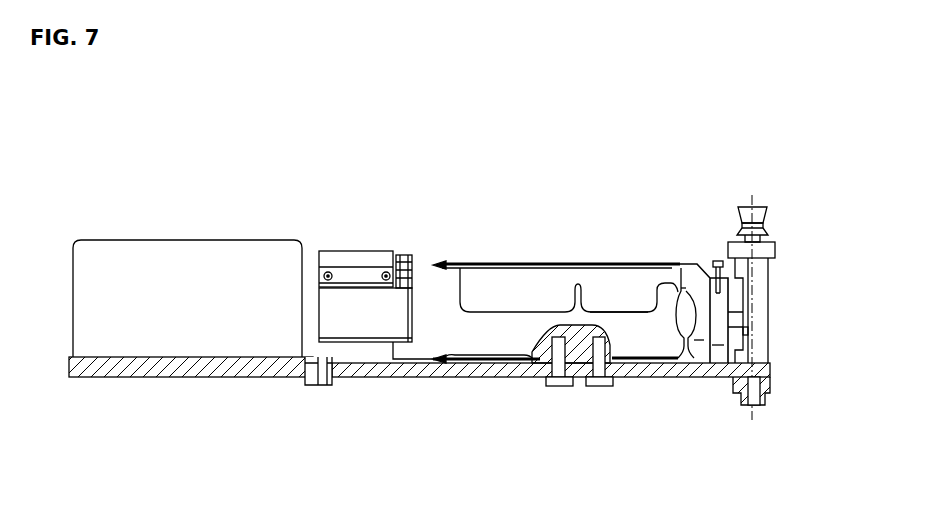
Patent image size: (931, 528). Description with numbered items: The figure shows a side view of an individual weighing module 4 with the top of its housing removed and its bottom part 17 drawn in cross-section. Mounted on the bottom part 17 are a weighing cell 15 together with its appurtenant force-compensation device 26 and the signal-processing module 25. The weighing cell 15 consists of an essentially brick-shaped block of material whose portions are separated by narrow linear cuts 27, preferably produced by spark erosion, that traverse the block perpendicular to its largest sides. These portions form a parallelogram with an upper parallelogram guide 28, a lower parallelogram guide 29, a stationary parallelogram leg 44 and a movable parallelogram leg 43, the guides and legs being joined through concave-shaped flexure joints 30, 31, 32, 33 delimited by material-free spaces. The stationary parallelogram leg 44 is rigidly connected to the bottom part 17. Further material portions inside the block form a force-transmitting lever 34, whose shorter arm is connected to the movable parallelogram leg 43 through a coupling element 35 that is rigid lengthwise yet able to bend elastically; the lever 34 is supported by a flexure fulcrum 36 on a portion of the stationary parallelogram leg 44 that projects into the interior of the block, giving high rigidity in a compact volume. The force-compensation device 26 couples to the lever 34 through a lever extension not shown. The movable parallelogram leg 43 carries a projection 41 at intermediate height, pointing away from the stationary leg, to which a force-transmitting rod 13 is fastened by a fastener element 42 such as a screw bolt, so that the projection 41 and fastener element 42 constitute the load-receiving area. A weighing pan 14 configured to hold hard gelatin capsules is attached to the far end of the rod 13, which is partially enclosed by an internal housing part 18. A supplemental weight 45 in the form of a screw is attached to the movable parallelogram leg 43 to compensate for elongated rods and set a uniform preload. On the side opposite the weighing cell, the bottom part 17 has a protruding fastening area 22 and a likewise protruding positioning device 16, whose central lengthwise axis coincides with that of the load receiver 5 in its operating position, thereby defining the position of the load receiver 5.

The weighing module 4 is at (242, 244).
The load receiver 5 is at (786, 275).
The force-transmitting rod 13 is at (745, 293).
The weighing pan 14 is at (757, 214).
The weighing cell 15 is at (560, 244).
The positioning device 16 is at (765, 397).
The bottom part 17 is at (396, 378).
The internal housing part 18 is at (763, 313).
The fastening area 22 is at (316, 390).
The signal-processing module 25 is at (140, 278).
The force-compensation device 26 is at (362, 318).
The narrow linear cuts 27 is at (610, 298).
The upper parallelogram guide 28 is at (505, 262).
The lower parallelogram guide 29 is at (481, 362).
The flexure joint 30 is at (441, 362).
The flexure joint 31 is at (700, 342).
The flexure joint 32 is at (677, 262).
The flexure joint 33 is at (441, 262).
The force-transmitting lever 34 is at (597, 288).
The coupling element 35 is at (688, 320).
The flexure fulcrum 36 is at (578, 290).
The projection 41 is at (738, 318).
The fastener element 42 is at (748, 331).
The movable parallelogram leg 43 is at (722, 343).
The stationary parallelogram leg 44 is at (441, 316).
The supplemental weight 45 is at (719, 262).